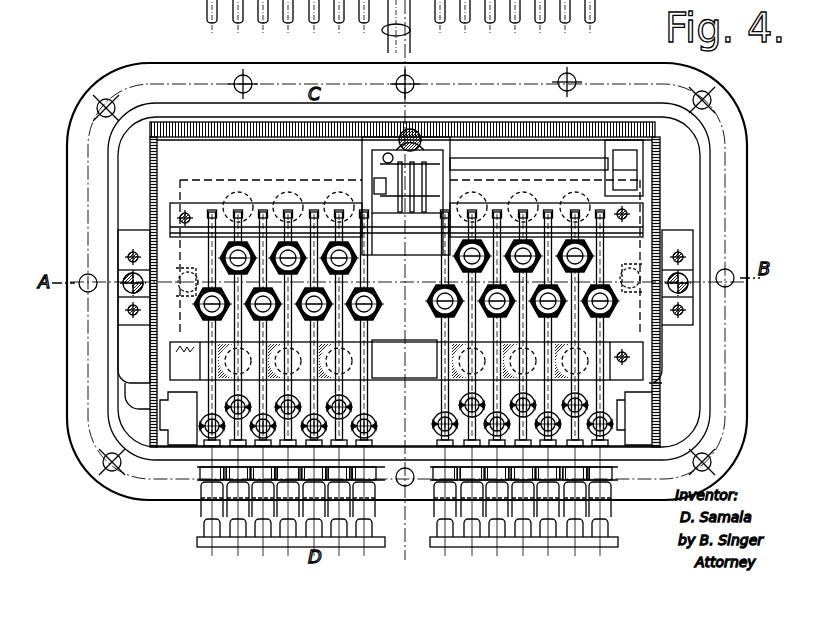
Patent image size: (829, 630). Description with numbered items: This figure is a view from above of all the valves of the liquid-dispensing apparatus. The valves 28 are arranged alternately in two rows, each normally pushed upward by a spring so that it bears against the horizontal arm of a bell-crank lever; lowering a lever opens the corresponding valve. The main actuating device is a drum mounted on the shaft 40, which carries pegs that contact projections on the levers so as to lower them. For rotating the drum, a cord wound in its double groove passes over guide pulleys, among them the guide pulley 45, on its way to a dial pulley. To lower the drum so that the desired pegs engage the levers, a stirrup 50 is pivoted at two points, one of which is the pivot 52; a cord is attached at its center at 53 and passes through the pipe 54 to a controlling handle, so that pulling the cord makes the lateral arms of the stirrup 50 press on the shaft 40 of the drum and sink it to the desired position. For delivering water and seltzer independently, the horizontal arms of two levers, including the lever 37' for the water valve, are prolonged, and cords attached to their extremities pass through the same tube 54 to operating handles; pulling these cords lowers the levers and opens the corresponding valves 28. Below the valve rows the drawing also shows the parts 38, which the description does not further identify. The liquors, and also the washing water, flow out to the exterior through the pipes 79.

The stirrup 50 is at (152, 190).
The pivot of the stirrup 52 is at (128, 410).
The terminal block 38 is at (205, 527).
The bell-crank lever for water delivery valve 37' is at (538, 140).
The cord attachment point of the stirrup 53 is at (416, 132).
The guide pulley 45 is at (398, 214).
The valve 28 is at (455, 258).
The shaft 40 is at (176, 297).
The pipe 54 is at (404, 8).
The pipe 79 is at (586, 2).